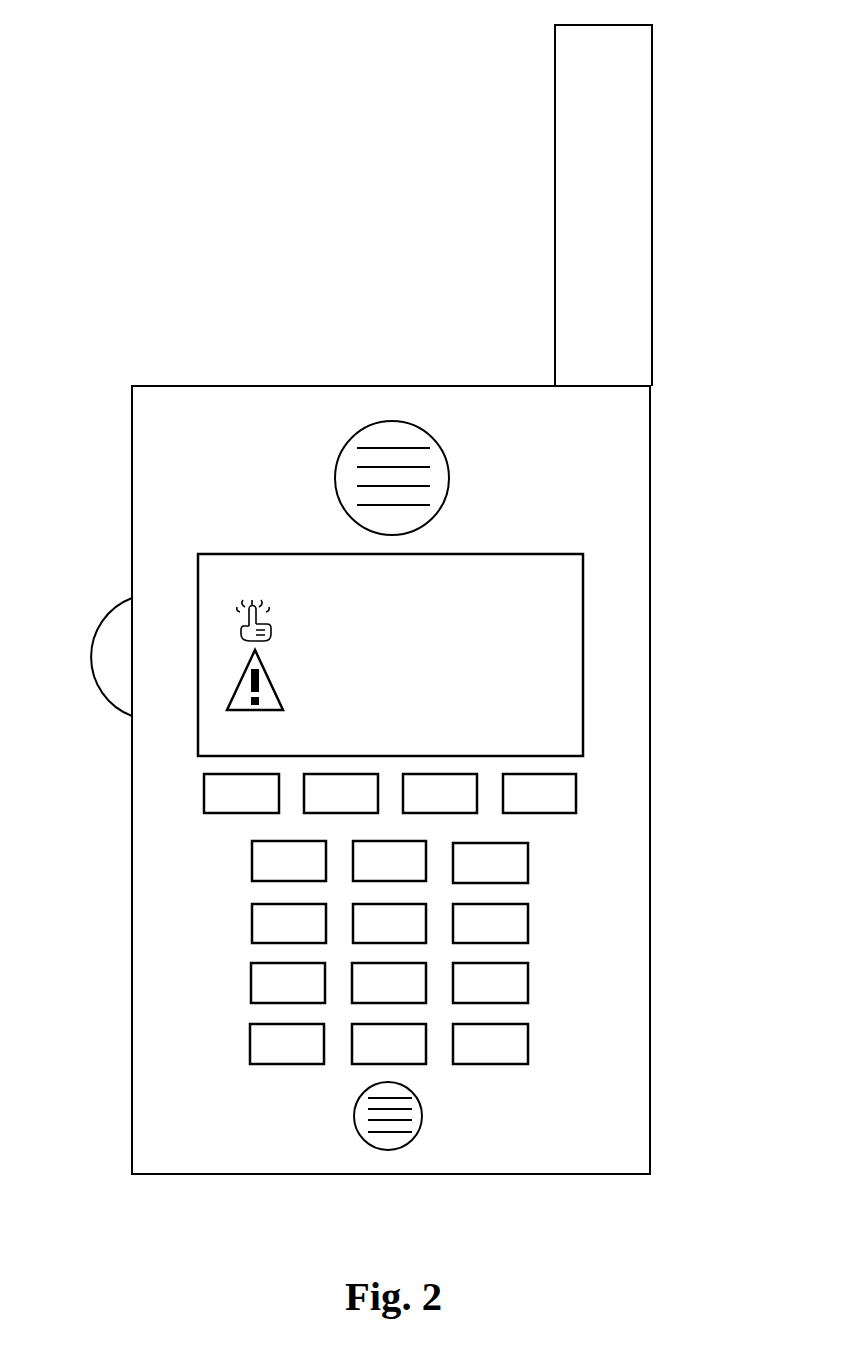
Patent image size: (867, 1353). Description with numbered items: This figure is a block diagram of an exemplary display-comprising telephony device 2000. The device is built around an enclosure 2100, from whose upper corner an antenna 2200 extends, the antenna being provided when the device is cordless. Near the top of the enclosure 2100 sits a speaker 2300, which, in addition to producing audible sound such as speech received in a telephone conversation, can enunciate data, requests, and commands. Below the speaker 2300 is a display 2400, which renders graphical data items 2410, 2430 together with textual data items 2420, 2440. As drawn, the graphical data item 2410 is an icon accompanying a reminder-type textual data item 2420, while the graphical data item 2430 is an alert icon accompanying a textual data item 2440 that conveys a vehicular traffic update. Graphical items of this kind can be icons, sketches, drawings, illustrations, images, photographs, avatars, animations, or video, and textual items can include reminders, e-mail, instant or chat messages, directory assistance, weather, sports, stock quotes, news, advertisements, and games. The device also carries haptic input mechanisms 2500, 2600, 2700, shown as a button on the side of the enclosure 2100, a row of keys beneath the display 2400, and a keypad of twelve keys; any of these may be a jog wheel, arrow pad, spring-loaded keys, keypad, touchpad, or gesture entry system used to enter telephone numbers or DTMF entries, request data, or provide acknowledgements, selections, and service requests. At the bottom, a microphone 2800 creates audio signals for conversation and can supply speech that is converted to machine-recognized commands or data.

The telephony device 2000 is at (218, 105).
The enclosure 2100 is at (391, 780).
The antenna 2200 is at (651, 205).
The speaker 2300 is at (439, 478).
The display 2400 is at (596, 585).
The graphical data item 2410 is at (261, 600).
The textual data item 2420 is at (402, 599).
The graphical data item 2430 is at (260, 702).
The textual data item 2440 is at (432, 703).
The haptic input mechanism 2500 is at (75, 657).
The haptic input mechanism 2600 is at (590, 796).
The haptic input mechanism 2700 is at (431, 952).
The microphone 2800 is at (431, 1116).